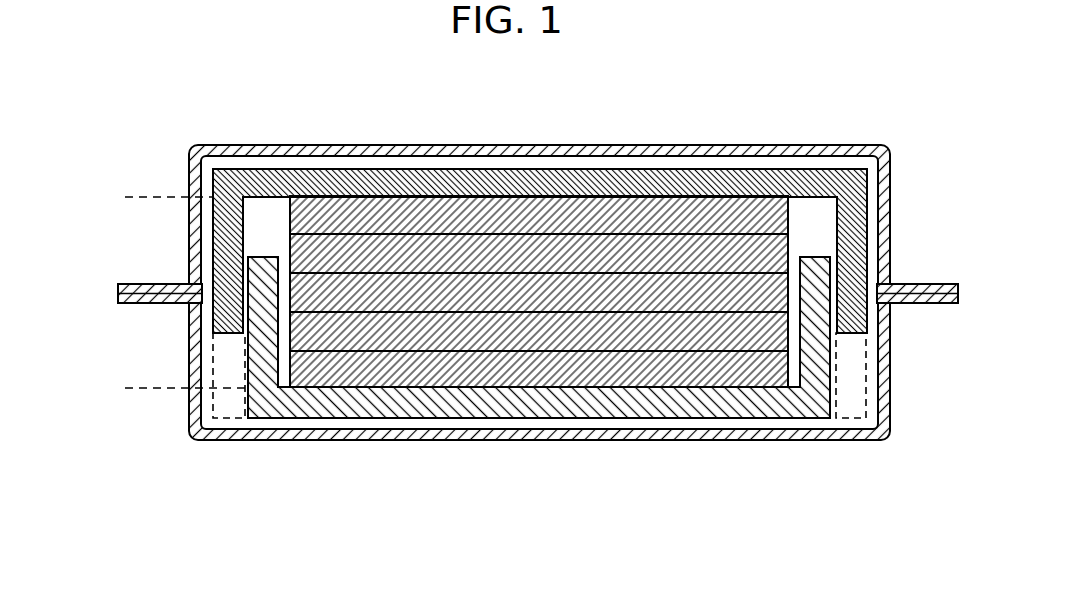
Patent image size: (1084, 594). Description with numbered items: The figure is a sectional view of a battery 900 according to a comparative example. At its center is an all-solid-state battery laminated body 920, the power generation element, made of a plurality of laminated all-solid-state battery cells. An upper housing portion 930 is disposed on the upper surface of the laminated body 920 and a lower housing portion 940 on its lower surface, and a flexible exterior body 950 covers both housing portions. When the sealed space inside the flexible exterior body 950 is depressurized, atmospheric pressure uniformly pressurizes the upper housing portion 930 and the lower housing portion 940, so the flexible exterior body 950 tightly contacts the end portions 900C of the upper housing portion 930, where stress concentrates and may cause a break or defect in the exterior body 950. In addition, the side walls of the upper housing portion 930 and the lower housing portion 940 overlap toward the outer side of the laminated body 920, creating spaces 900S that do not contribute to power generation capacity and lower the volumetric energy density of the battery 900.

The battery 900 is at (250, 107).
The flexible exterior body 950 is at (598, 147).
The all-solid-state battery laminated body 920 is at (118, 197).
The upper housing portion 930 is at (750, 188).
The lower housing portion 940 is at (703, 402).
The spaces 900S is at (242, 420).
The end portions 900C is at (197, 428).